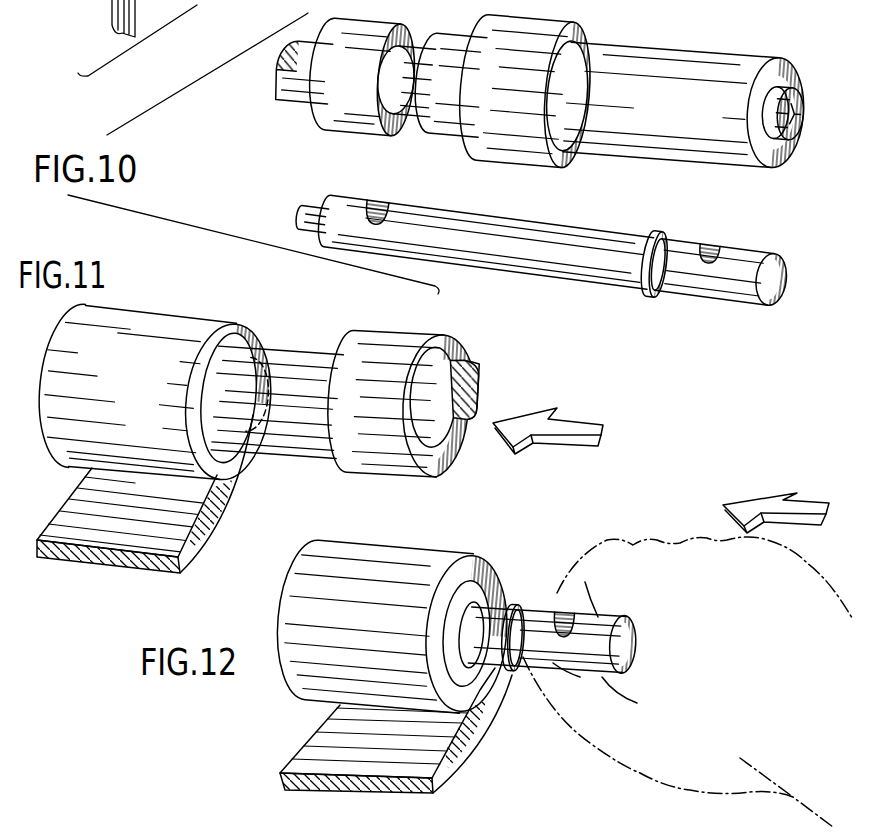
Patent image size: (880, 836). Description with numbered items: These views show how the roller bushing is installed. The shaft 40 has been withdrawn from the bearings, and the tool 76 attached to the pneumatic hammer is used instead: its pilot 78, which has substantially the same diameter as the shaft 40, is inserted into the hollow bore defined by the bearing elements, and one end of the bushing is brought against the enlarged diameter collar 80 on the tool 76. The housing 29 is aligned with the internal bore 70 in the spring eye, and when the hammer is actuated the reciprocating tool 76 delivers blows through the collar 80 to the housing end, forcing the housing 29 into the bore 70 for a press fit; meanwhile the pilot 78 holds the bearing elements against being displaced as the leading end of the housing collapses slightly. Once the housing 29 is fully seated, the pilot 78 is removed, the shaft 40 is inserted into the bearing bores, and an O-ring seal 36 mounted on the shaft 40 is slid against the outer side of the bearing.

In FIG. 10, the housing 29 is at (745, 70).
In FIG. 11, the housing 29 is at (293, 370).
In FIG. 10, the enlarged diameter collar 80 is at (583, 32).
In FIG. 11, the enlarged diameter collar 80 is at (367, 453).
In FIG. 10, the pilot 78 is at (807, 143).
In FIG. 10, the shaft 40 is at (613, 248).
In FIG. 10, the O-ring seal 36 is at (653, 297).
In FIG. 12, the O-ring seal 36 is at (523, 603).
In FIG. 11, the internal bore 70 is at (222, 342).
In FIG. 12, the internal bore 70 is at (493, 568).
In FIG. 11, the tool 76 is at (478, 458).